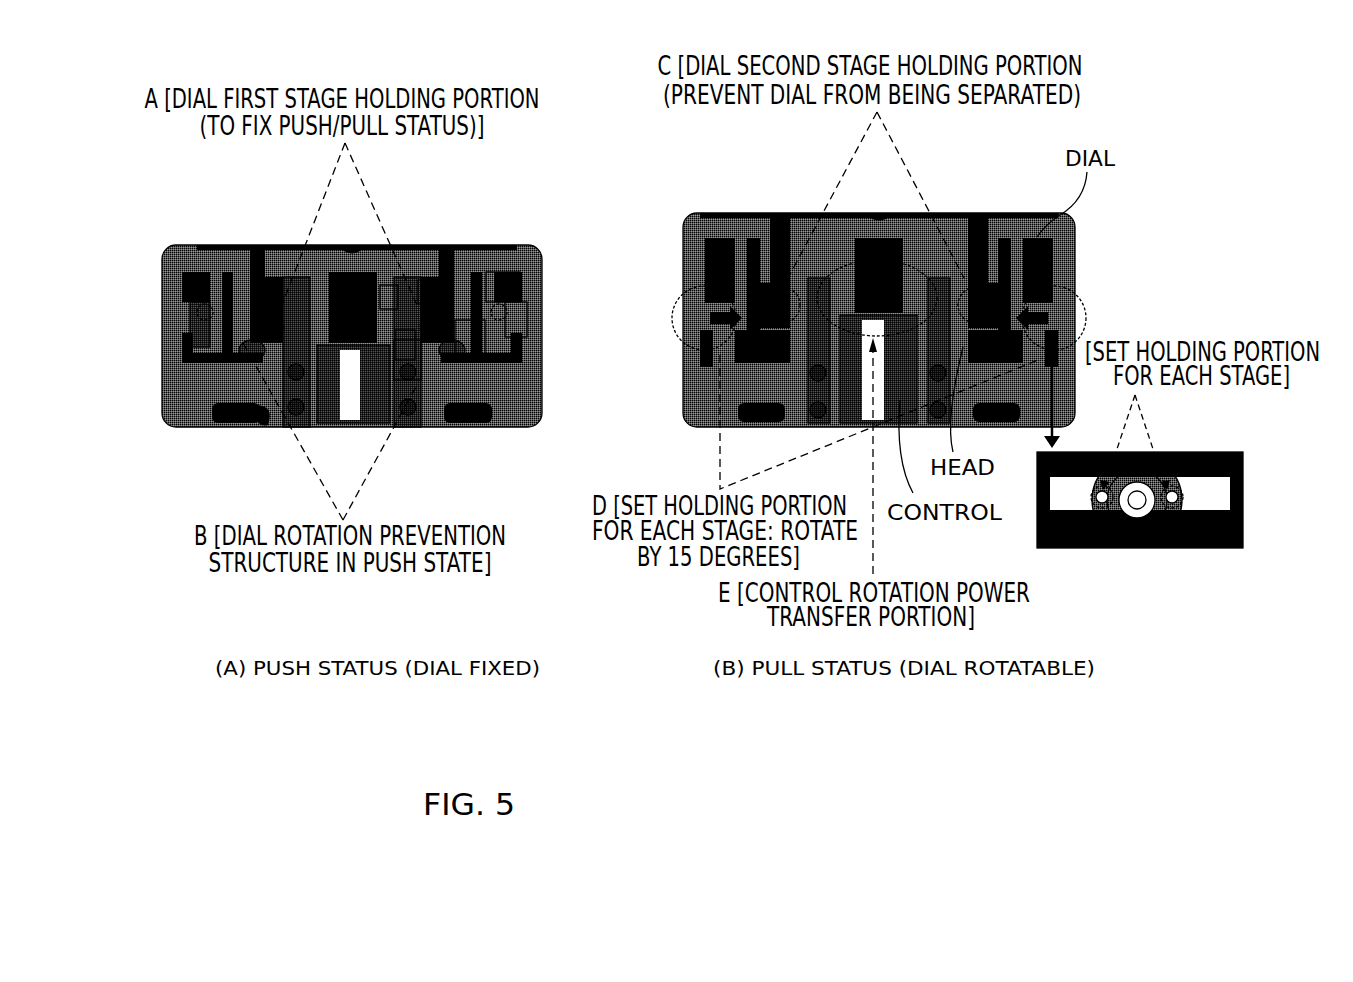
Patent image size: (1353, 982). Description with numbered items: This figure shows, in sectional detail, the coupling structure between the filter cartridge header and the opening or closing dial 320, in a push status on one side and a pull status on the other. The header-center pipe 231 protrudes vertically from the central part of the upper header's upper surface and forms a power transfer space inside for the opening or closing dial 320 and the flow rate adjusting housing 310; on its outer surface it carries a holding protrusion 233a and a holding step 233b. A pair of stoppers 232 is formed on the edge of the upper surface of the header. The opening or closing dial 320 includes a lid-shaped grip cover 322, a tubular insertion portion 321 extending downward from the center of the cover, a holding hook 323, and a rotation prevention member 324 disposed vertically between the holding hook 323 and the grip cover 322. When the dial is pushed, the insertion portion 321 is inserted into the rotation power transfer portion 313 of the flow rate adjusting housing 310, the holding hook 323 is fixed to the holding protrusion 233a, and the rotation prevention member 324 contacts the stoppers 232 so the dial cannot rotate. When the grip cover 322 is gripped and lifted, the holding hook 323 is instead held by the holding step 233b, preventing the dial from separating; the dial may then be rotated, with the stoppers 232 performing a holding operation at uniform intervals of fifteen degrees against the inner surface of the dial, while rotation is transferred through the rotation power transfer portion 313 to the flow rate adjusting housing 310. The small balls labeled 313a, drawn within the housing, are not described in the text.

The header-center pipe 231 is at (275, 290).
The stoppers 232 is at (190, 310).
The holding protrusion 233a is at (247, 342).
The holding step 233b is at (213, 298).
The flow rate adjusting housing 310 is at (405, 342).
The rotation power transfer portion 313 is at (407, 360).
The holding ball 313a is at (410, 408).
The opening or closing dial 320 is at (390, 307).
The insertion portion 321 is at (425, 300).
The grip cover 322 is at (533, 337).
The holding hook 323 is at (468, 335).
The rotation prevention member 324 is at (495, 290).